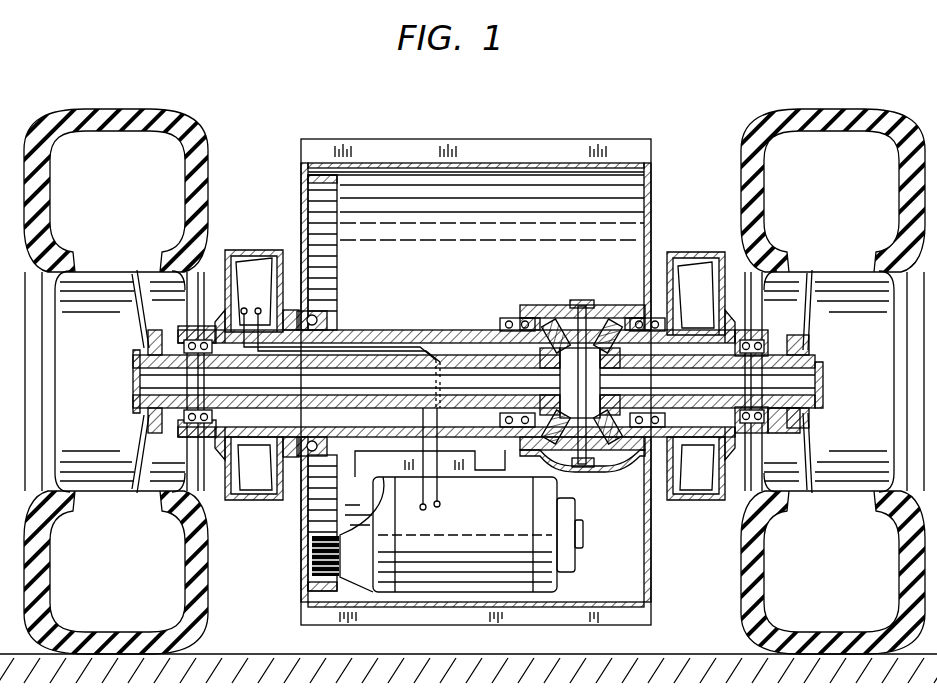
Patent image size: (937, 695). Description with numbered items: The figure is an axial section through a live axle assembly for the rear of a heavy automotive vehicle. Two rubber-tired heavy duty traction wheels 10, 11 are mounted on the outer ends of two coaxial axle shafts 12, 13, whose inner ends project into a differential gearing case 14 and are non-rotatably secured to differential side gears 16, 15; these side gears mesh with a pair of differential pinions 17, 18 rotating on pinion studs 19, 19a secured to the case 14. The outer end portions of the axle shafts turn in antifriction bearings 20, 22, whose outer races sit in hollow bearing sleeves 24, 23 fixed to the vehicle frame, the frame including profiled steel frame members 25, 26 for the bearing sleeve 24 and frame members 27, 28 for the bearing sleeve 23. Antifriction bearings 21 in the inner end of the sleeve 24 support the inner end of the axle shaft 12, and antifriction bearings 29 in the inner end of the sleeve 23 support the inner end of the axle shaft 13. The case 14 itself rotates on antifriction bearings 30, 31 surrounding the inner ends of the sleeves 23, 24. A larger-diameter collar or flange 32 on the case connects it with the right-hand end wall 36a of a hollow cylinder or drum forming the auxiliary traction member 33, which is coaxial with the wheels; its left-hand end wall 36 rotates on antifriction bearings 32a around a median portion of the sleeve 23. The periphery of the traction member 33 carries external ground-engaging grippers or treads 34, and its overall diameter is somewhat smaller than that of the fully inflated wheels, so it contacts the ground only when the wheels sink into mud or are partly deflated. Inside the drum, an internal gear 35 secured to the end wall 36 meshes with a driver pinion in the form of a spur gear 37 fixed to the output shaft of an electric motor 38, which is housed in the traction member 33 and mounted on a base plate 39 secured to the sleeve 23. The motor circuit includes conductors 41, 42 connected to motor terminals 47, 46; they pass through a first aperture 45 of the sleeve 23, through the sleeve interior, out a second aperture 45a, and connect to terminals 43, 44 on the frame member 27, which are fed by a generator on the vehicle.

The traction wheel 10 is at (847, 120).
The traction wheel 11 is at (105, 118).
The axle shaft 12 is at (812, 350).
The axle shaft 13 is at (148, 348).
The differential gearing case 14 is at (553, 318).
The differential side gear 15 is at (544, 330).
The differential side gear 16 is at (612, 325).
The differential pinion 17 is at (603, 320).
The differential pinion 18 is at (598, 466).
The pinion stud 19 is at (583, 304).
The pinion stud 19a is at (582, 470).
The antifriction bearing 20 is at (755, 442).
The antifriction bearing 21 is at (664, 430).
The antifriction bearing 22 is at (186, 444).
The bearing sleeve 23 is at (190, 334).
The bearing sleeve 24 is at (704, 330).
The frame member 25 is at (700, 252).
The frame member 26 is at (701, 503).
The frame member 27 is at (245, 255).
The frame member 28 is at (236, 504).
The antifriction bearing 29 is at (505, 340).
The antifriction bearing 30 is at (512, 320).
The antifriction bearing 31 is at (638, 318).
The collar or flange 32 is at (640, 302).
The antifriction bearing 32a is at (338, 301).
The traction member 33 is at (634, 251).
The grippers or treads 34 is at (320, 627).
The internal gear 35 is at (304, 186).
The end wall 36 is at (306, 528).
The end wall 36a is at (648, 590).
The spur gear 37 is at (310, 576).
The electric motor 38 is at (548, 546).
The base plate 39 is at (456, 470).
The conductor 41 is at (430, 386).
The conductor 42 is at (442, 386).
The terminal 43 is at (244, 308).
The terminal 44 is at (266, 303).
The first aperture 45 is at (420, 436).
The second aperture 45a is at (260, 372).
The motor terminal 46 is at (439, 508).
The motor terminal 47 is at (422, 511).